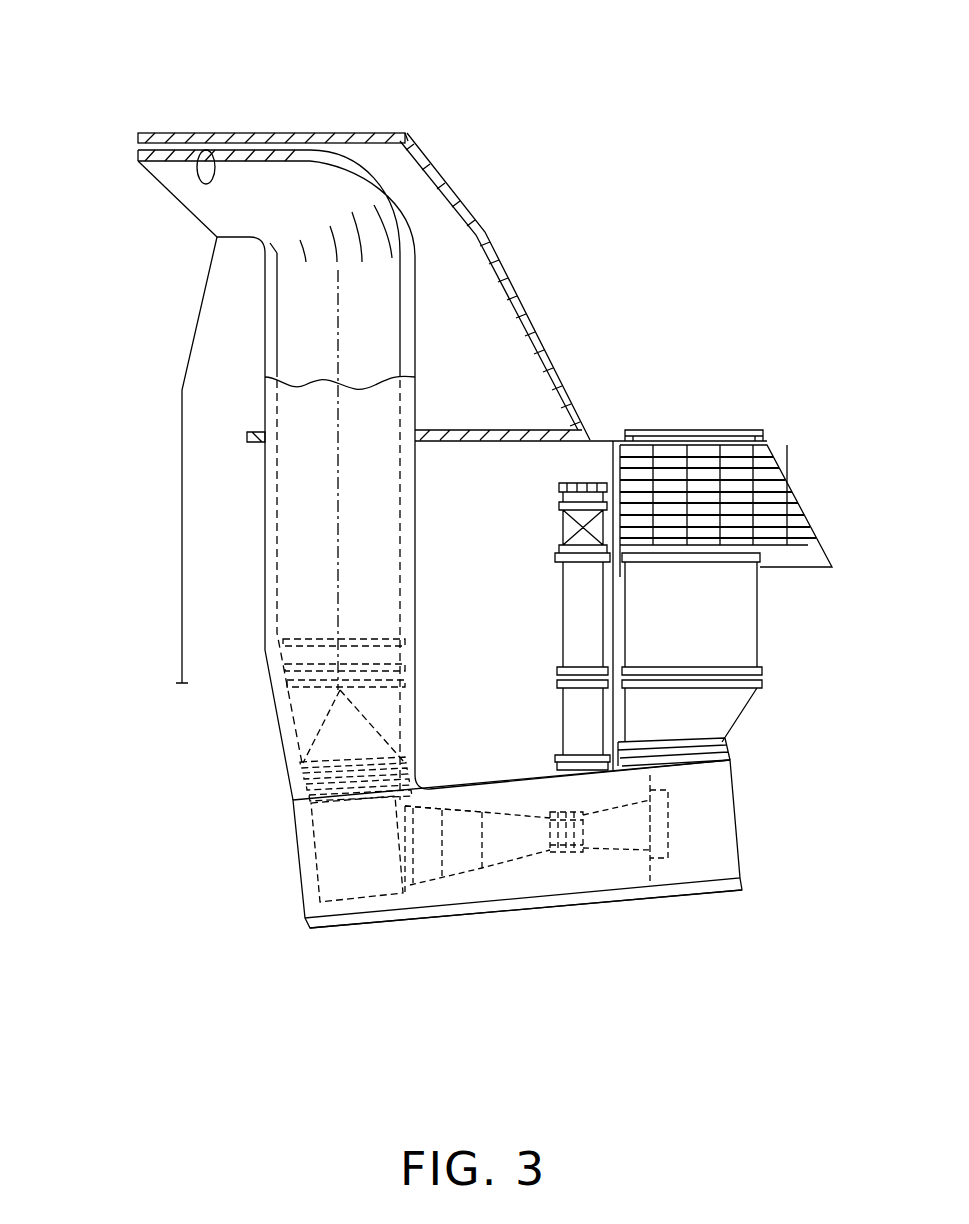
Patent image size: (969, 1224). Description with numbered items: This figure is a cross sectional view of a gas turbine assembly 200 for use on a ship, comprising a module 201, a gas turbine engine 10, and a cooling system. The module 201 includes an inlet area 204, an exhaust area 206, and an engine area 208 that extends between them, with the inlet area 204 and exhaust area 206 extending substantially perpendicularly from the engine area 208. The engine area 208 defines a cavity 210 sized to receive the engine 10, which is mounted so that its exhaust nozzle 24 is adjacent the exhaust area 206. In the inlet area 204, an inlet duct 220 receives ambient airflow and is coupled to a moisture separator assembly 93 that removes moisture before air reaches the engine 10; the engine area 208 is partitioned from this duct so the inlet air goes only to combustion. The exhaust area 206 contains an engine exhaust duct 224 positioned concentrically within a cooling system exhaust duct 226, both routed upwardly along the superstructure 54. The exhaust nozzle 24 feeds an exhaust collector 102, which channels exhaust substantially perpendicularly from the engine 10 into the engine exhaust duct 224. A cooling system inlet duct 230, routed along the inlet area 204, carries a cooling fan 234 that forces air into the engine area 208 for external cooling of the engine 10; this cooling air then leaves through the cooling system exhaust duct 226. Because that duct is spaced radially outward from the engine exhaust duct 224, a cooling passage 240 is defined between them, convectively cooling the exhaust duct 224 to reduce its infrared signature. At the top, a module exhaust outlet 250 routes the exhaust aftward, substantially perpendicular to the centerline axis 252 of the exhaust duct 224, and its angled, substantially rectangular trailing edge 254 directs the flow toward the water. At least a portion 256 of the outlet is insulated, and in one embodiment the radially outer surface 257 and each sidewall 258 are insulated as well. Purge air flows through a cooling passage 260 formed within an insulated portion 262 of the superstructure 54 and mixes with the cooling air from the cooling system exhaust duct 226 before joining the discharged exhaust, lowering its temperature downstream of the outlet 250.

The gas turbine assembly 200 is at (126, 44).
The radially outer surface 257 is at (200, 150).
The module exhaust outlet 250 is at (248, 152).
The insulated portion 256 is at (322, 133).
The insulated portion of superstructure 262 is at (416, 124).
The trailing edge 254 is at (150, 180).
The sidewall 258 is at (222, 206).
The cooling passage 260 is at (456, 238).
The superstructure 54 is at (470, 325).
The centerline axis 252 is at (336, 350).
The engine exhaust duct 224 is at (275, 432).
The moisture separator assembly 93 is at (766, 456).
The cooling fan 234 is at (565, 525).
The cooling system exhaust duct 226 is at (267, 517).
The cooling system inlet duct 230 is at (560, 622).
The inlet duct 220 is at (692, 647).
The inlet area 204 is at (775, 628).
The exhaust area 206 is at (250, 562).
The cooling passage 240 is at (253, 610).
The cavity 210 is at (515, 795).
The engine exhaust nozzle 24 is at (445, 812).
The engine area 208 is at (575, 878).
The module 201 is at (514, 968).
The exhaust collector 102 is at (330, 920).
The gas turbine engine 10 is at (460, 870).